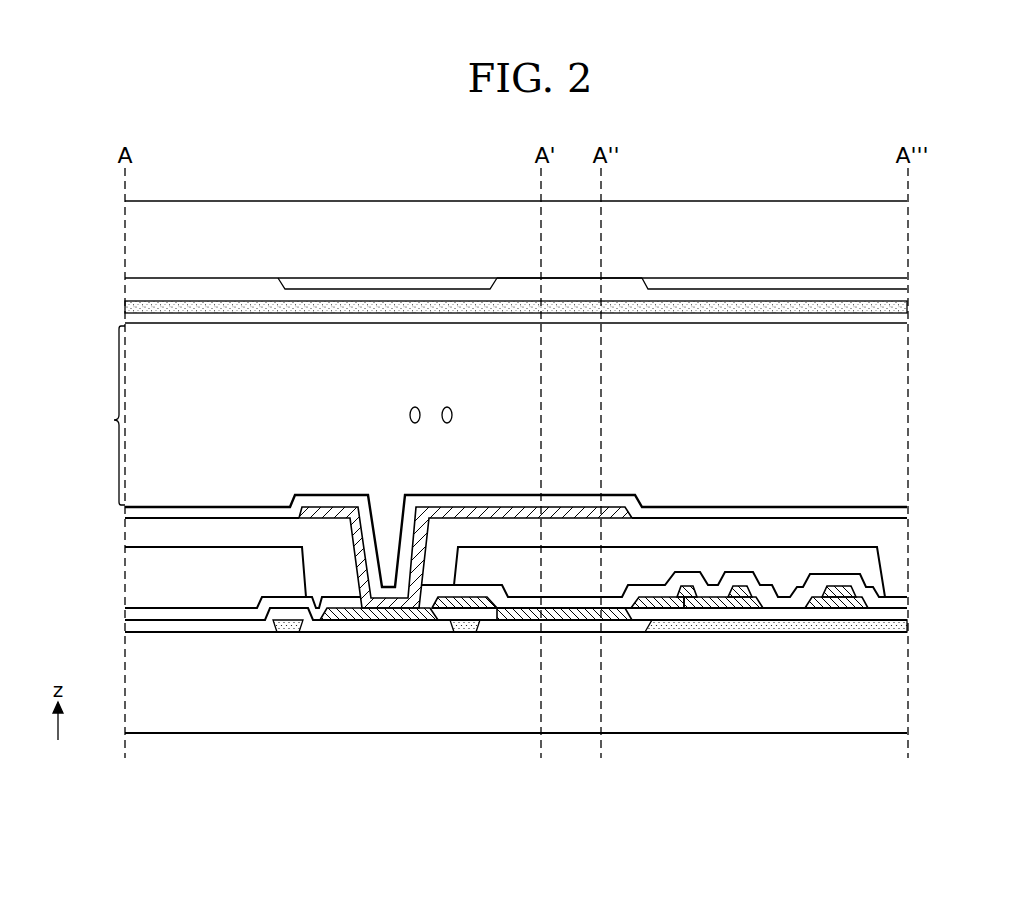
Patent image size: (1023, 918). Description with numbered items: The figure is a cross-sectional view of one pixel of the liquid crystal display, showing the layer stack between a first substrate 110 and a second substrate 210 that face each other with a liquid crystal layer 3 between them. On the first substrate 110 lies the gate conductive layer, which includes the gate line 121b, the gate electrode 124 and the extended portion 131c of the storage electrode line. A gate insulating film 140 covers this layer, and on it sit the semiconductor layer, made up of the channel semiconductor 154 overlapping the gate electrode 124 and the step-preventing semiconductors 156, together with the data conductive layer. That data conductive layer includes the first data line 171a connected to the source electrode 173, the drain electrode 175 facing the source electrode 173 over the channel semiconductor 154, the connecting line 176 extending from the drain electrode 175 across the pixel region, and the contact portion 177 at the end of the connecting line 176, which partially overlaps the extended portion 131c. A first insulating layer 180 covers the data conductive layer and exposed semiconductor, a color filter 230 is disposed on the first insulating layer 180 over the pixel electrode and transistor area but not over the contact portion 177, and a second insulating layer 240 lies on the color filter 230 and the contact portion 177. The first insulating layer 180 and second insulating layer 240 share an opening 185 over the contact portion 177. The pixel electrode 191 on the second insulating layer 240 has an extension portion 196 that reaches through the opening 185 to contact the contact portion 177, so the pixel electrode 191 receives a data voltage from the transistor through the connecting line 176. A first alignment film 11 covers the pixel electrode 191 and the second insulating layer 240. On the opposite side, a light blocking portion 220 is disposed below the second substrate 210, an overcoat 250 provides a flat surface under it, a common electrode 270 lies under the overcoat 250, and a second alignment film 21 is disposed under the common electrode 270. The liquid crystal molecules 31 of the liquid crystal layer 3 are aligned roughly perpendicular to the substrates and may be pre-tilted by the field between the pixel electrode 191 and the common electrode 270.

The second substrate 210 is at (890, 242).
The light blocking portion 220 is at (890, 283).
The overcoat 250 is at (622, 289).
The common electrode 270 is at (890, 308).
The second alignment film 21 is at (892, 320).
The liquid crystal layer 3 is at (112, 415).
The liquid crystal molecules 31 is at (452, 415).
The first alignment film 11 is at (890, 503).
The second insulating layer 240 is at (890, 531).
The color filter 230 is at (845, 553).
The first insulating layer 180 is at (890, 598).
The gate insulating film 140 is at (890, 612).
The gate line 121b is at (890, 628).
The first substrate 110 is at (890, 690).
The extended portion 131c is at (287, 634).
The opening 185 is at (362, 541).
The extension portion 196 is at (363, 569).
The contact portion 177 is at (402, 614).
The pixel electrode 191 is at (455, 513).
The connecting line 176 is at (570, 615).
The drain electrode 175 is at (660, 603).
The channel semiconductor 154 is at (694, 603).
The gate electrode 124 is at (718, 630).
The source electrode 173 is at (738, 592).
The step-preventing semiconductors 156 is at (818, 596).
The first data line 171a is at (845, 596).